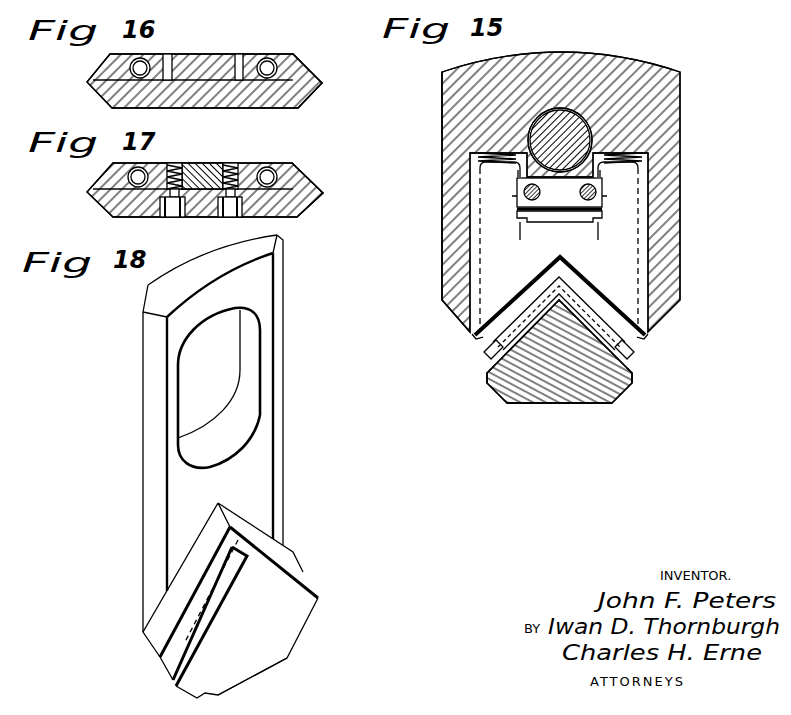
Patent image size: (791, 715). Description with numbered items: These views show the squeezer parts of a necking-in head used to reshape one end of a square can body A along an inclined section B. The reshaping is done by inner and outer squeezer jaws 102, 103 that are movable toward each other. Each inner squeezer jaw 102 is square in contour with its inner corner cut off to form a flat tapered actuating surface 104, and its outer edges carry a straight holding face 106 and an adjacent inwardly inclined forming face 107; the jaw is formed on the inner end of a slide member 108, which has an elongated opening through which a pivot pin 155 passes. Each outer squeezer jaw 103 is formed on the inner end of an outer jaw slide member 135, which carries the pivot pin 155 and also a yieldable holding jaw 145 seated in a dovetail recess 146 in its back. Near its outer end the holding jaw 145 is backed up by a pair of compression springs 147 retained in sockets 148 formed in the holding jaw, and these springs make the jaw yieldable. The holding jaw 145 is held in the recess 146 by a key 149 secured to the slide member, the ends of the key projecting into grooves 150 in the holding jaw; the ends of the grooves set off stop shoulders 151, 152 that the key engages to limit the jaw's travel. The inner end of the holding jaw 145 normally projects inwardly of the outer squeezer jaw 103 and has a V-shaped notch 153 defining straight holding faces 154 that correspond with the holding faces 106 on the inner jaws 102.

In FIG. 15, the pivot pin 155 is at (561, 122).
In FIG. 16, the outer jaw slide member 135 is at (297, 70).
In FIG. 17, the outer jaw slide member 135 is at (312, 200).
In FIG. 15, the outer jaw slide member 135 is at (662, 98).
In FIG. 16, the compression spring 147 is at (148, 58).
In FIG. 17, the compression spring 147 is at (127, 177).
In FIG. 15, the compression spring 147 is at (476, 160).
In FIG. 16, the outer squeezer jaw 103 is at (117, 95).
In FIG. 17, the outer squeezer jaw 103 is at (117, 205).
In FIG. 15, the outer squeezer jaw 103 is at (444, 197).
In FIG. 15, the stop shoulder 152 is at (518, 177).
In FIG. 17, the key 149 is at (198, 170).
In FIG. 15, the key 149 is at (559, 192).
In FIG. 15, the groove 150 is at (517, 195).
In FIG. 15, the stop shoulder 151 is at (520, 226).
In FIG. 16, the dovetail recess 146 is at (278, 83).
In FIG. 17, the dovetail recess 146 is at (280, 193).
In FIG. 15, the dovetail recess 146 is at (553, 218).
In FIG. 15, the holding face 154 is at (563, 256).
In FIG. 16, the holding jaw 145 is at (118, 78).
In FIG. 17, the holding jaw 145 is at (118, 186).
In FIG. 15, the holding jaw 145 is at (486, 263).
In FIG. 15, the V-shaped notch 153 is at (498, 314).
In FIG. 15, the can body A is at (486, 349).
In FIG. 15, the inclined section B is at (622, 350).
In FIG. 18, the forming face 107 is at (287, 575).
In FIG. 15, the forming face 107 is at (505, 368).
In FIG. 18, the inner squeezer jaw 102 is at (283, 617).
In FIG. 15, the inner squeezer jaw 102 is at (532, 383).
In FIG. 18, the actuating surface 104 is at (258, 677).
In FIG. 15, the actuating surface 104 is at (562, 404).
In FIG. 18, the inner jaw slide member 108 is at (177, 482).
In FIG. 18, the holding face 106 is at (260, 538).
In FIG. 16, the socket 148 is at (127, 68).
In FIG. 17, the socket 148 is at (148, 167).